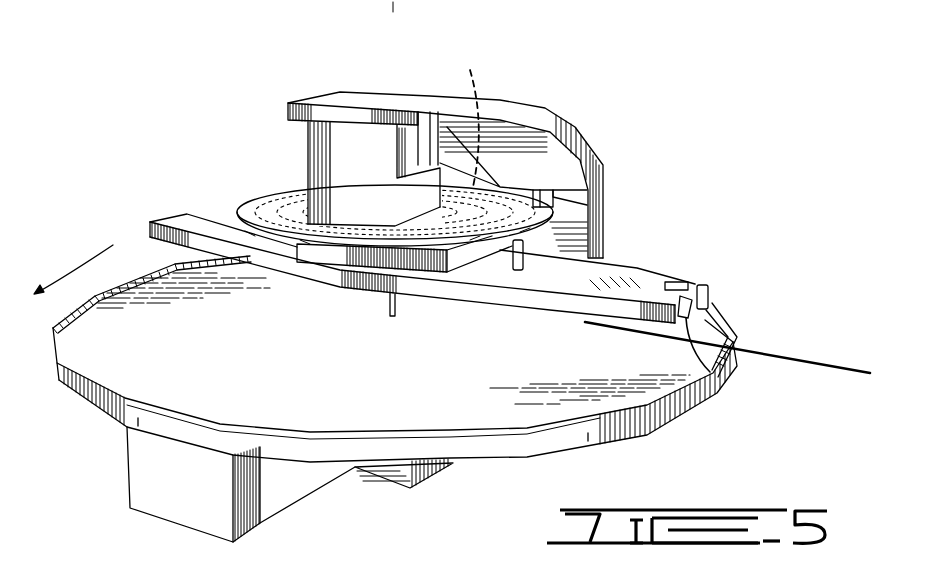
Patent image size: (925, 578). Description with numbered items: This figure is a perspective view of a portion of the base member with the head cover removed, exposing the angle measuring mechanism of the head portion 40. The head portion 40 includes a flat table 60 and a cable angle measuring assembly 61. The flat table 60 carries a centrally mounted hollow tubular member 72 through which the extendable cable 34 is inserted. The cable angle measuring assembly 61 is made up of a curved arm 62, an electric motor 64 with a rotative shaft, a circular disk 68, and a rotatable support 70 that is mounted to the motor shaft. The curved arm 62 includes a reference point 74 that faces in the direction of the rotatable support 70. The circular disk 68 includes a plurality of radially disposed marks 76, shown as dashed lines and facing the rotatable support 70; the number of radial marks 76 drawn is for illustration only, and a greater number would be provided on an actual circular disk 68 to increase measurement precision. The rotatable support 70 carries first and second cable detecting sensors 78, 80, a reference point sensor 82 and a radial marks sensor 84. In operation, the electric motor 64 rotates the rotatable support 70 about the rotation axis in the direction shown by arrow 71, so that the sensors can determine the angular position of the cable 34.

The extendable cable 34 is at (822, 362).
The head portion 40 is at (757, 132).
The flat table 60 is at (110, 350).
The cable angle measuring assembly 61 is at (333, 117).
The curved arm 62 is at (532, 122).
The electric motor 64 is at (310, 138).
The circular disk 68 is at (560, 212).
The rotatable support 70 is at (634, 284).
The arrow 71 is at (91, 248).
The hollow tubular member 72 is at (385, 320).
The reference point 74 is at (552, 197).
The radial marks 76 is at (464, 114).
The first cable detecting sensor 78 is at (712, 302).
The second cable detecting sensor 80 is at (716, 374).
The reference point sensor 82 is at (688, 284).
The radial marks sensor 84 is at (527, 262).